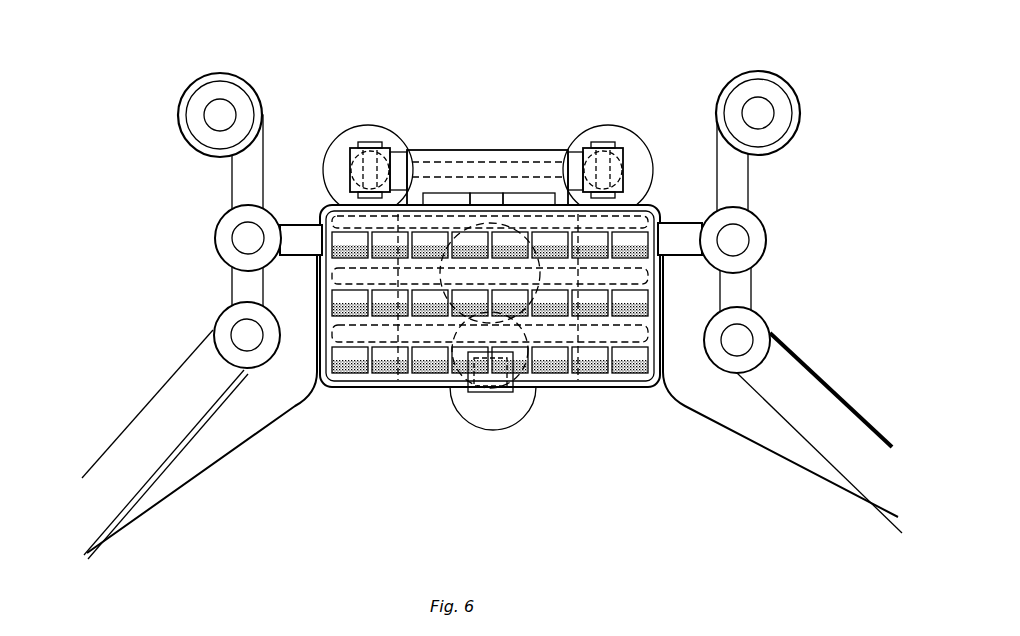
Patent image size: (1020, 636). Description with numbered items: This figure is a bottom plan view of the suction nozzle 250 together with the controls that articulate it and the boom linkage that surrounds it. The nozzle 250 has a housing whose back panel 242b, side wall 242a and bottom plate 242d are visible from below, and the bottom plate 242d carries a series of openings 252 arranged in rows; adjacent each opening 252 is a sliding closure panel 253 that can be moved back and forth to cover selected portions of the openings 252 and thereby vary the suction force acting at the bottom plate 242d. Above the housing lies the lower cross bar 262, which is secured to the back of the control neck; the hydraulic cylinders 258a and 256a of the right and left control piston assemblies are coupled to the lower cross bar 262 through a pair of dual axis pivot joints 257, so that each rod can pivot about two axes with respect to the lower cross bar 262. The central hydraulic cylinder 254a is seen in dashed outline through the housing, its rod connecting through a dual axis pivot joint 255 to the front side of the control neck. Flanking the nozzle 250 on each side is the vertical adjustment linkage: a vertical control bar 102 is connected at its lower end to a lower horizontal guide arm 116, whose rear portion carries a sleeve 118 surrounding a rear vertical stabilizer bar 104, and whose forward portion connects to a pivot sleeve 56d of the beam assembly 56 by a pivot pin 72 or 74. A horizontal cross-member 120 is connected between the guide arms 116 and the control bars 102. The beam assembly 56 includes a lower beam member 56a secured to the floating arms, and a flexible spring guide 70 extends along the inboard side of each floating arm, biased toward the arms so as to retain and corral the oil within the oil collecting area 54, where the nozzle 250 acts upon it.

The oil collecting area 54 is at (535, 462).
The beam assembly 56 is at (182, 358).
The lower beam member 56a is at (195, 392).
The pivot sleeves 56d is at (238, 312).
The flexible spring guide 70 is at (800, 462).
The pivot pin 72 is at (737, 342).
The pivot pin 74 is at (247, 335).
The vertical control bar 102 is at (248, 240).
The rear vertical stabilizer bar 104 is at (224, 112).
The lower horizontal guide arm 116 is at (250, 185).
The sleeve 118 is at (180, 114).
The horizontal cross-member 120 is at (300, 232).
The housing side wall 242a is at (362, 386).
The back panel 242b is at (655, 205).
The bottom plate 242d is at (628, 384).
The nozzle 250 is at (608, 388).
The openings 252 is at (404, 380).
The sliding closure panel 253 is at (432, 380).
The hydraulic cylinder 254a is at (490, 420).
The dual axis pivot joint 255 is at (488, 395).
The hydraulic cylinder 256a is at (602, 125).
The dual axis pivot joints 257 is at (382, 148).
The hydraulic cylinder 258a is at (378, 125).
The lower cross bar 262 is at (482, 150).